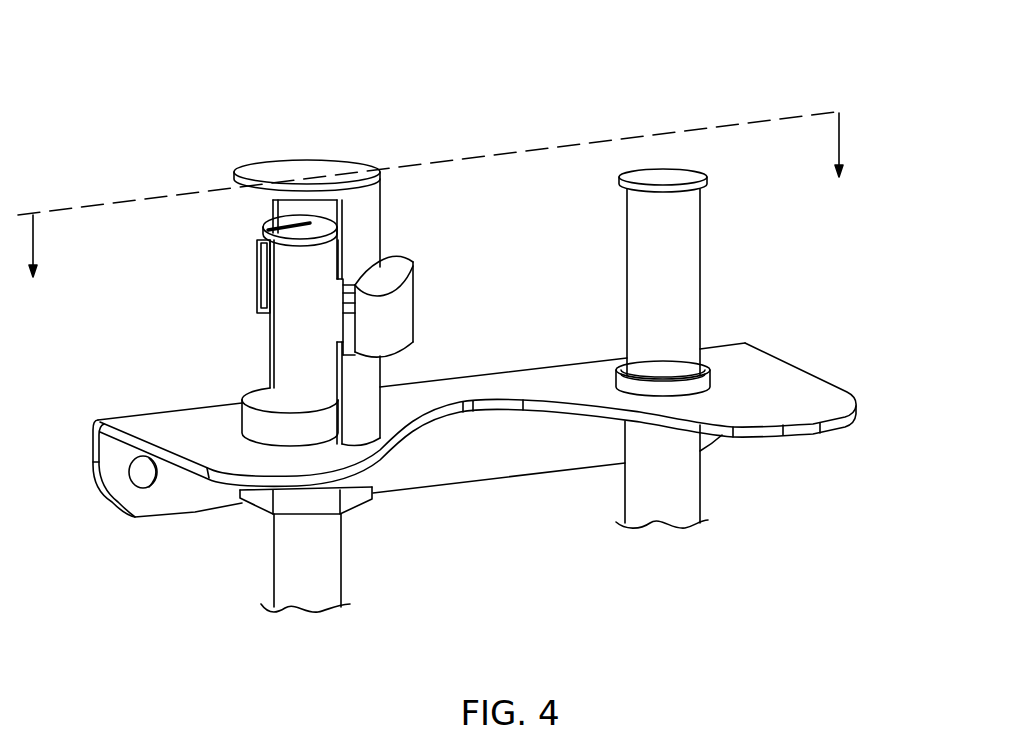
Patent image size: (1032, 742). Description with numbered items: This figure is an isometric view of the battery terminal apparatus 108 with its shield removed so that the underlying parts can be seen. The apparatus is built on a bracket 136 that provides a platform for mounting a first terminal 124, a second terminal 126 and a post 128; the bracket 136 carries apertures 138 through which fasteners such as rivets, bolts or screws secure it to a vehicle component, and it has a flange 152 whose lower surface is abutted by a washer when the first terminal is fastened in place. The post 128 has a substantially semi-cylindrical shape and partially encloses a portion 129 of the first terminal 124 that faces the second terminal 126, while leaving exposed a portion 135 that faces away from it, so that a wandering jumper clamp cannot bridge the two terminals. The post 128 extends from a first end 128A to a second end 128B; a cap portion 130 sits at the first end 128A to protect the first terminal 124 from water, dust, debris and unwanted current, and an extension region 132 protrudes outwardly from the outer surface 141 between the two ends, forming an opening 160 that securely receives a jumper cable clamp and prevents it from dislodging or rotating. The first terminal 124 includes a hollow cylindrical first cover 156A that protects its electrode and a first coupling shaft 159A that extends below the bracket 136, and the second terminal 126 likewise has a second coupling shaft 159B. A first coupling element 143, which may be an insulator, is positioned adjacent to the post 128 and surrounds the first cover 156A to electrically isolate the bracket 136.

The battery terminal apparatus 108 is at (802, 75).
The first terminal 124 is at (292, 318).
The second terminal 126 is at (685, 292).
The post 128 is at (367, 226).
The first end 128A is at (380, 176).
The second end 128B is at (377, 437).
The portion of the first terminal 129 is at (413, 279).
The cap portion 130 is at (307, 168).
The extension region 132 is at (395, 312).
The portion of the first terminal 135 is at (283, 390).
The bracket 136 is at (222, 478).
The apertures 138 is at (139, 480).
The outer surface 141 is at (362, 376).
The first coupling element 143 is at (252, 421).
The flange 152 is at (787, 377).
The first cover 156A is at (288, 273).
The first coupling shaft 159A is at (327, 578).
The second coupling shaft 159B is at (683, 491).
The opening 160 is at (337, 330).